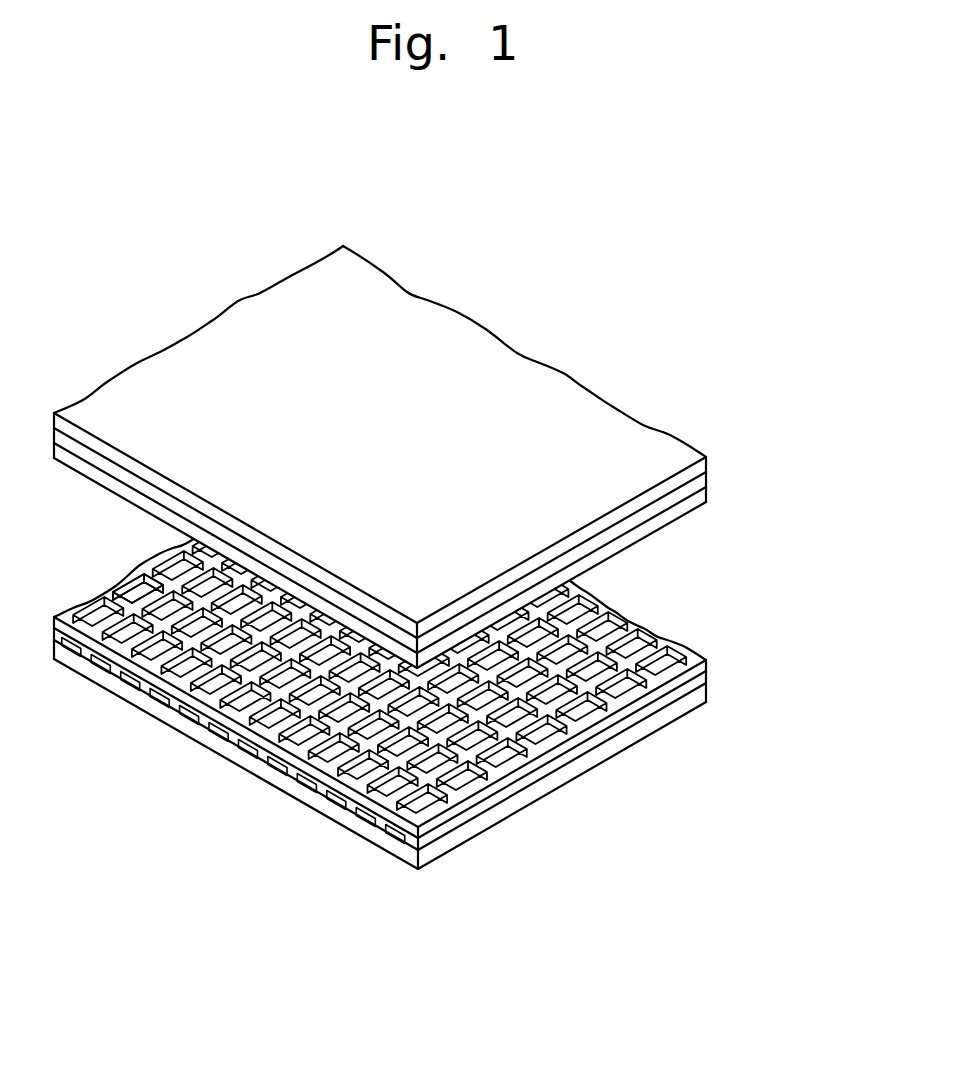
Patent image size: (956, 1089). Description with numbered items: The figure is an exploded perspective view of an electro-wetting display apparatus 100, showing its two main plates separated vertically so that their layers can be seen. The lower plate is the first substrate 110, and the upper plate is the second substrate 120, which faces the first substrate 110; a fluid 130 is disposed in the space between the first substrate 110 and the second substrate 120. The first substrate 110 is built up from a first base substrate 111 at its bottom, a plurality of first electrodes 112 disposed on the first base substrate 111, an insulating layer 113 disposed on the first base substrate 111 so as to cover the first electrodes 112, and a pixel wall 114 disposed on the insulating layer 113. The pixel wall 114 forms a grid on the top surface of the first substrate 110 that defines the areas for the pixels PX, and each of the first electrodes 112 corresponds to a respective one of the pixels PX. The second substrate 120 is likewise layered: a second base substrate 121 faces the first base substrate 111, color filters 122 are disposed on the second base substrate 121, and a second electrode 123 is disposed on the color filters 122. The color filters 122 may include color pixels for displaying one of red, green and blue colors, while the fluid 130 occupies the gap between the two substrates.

The electro-wetting display apparatus 100 is at (121, 287).
The first substrate 110 is at (451, 674).
The first base substrate 111 is at (660, 721).
The first electrodes 112 is at (393, 837).
The insulating layer 113 is at (672, 696).
The pixel wall 114 is at (702, 668).
The pixels PX is at (138, 592).
The second substrate 120 is at (449, 457).
The second base substrate 121 is at (702, 470).
The color filters 122 is at (703, 481).
The second electrode 123 is at (702, 498).
The fluid 130 is at (660, 584).